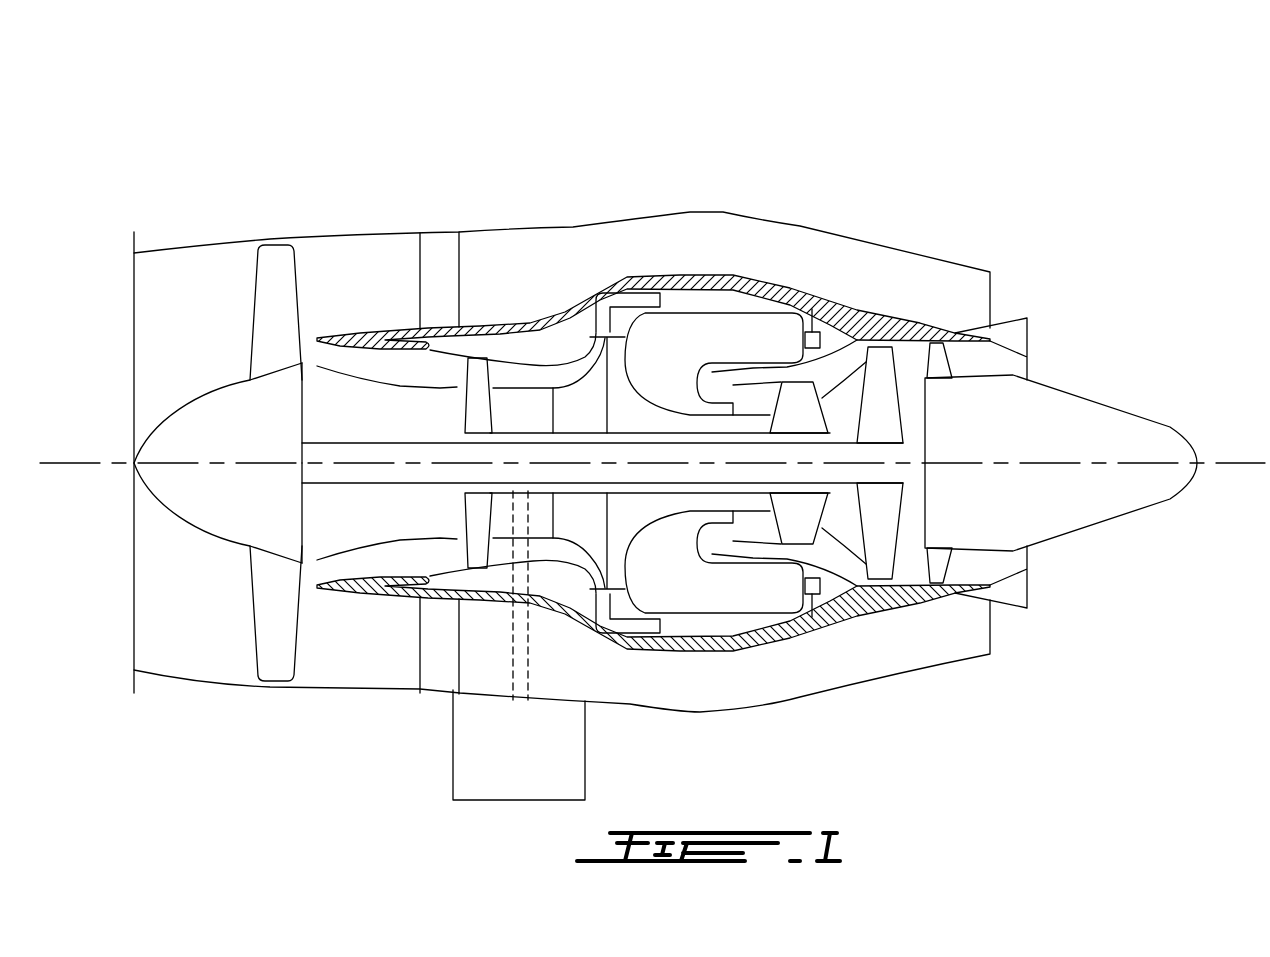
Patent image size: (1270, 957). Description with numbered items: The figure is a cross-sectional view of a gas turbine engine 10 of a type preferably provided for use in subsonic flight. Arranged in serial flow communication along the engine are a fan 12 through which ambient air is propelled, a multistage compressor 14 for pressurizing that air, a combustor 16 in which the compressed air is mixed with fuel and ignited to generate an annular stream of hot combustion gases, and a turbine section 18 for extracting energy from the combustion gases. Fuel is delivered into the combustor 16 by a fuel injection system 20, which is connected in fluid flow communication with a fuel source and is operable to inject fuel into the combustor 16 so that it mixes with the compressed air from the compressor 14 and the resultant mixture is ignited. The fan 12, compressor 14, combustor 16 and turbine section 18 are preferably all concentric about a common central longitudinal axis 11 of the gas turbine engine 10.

The gas turbine engine 10 is at (864, 164).
The central longitudinal axis 11 is at (1243, 460).
The fan 12 is at (273, 603).
The multistage compressor 14 is at (533, 377).
The combustor 16 is at (717, 333).
The turbine section 18 is at (840, 523).
The fuel injection system 20 is at (845, 320).